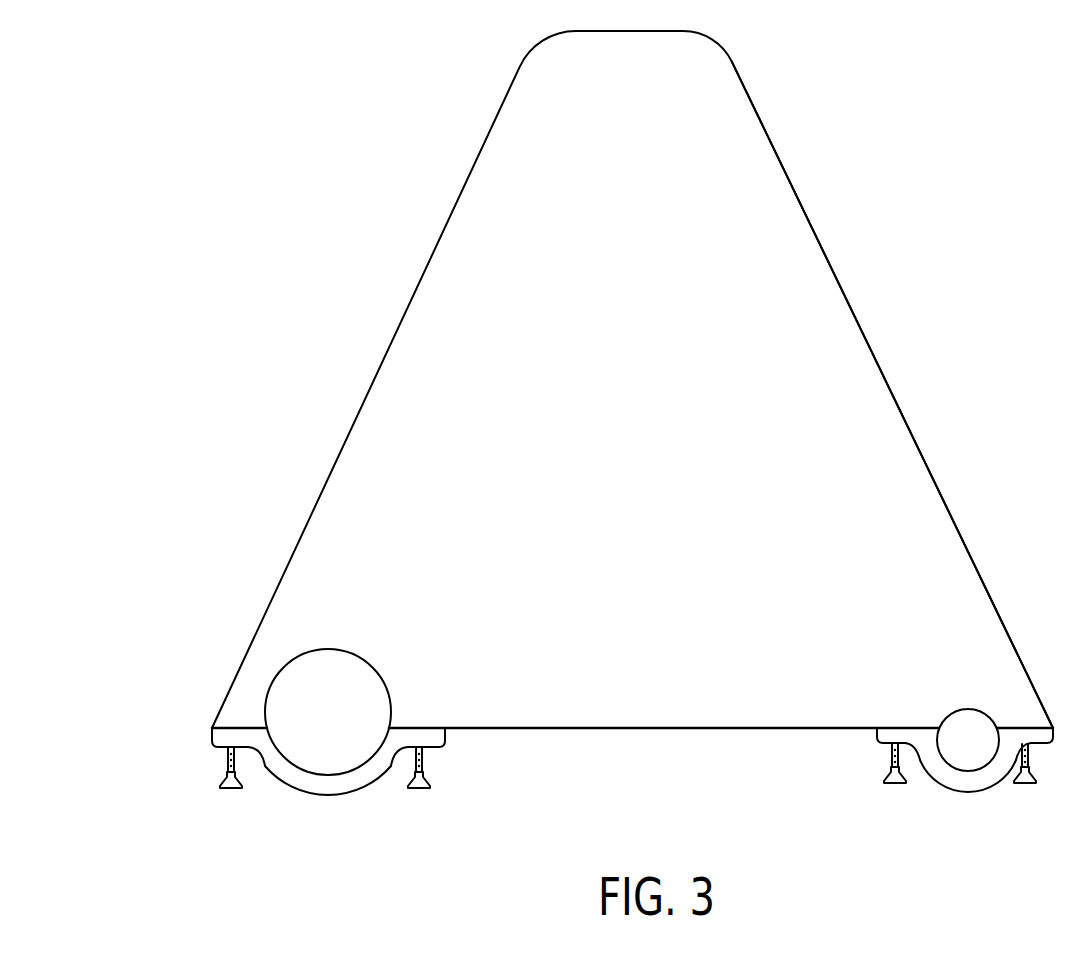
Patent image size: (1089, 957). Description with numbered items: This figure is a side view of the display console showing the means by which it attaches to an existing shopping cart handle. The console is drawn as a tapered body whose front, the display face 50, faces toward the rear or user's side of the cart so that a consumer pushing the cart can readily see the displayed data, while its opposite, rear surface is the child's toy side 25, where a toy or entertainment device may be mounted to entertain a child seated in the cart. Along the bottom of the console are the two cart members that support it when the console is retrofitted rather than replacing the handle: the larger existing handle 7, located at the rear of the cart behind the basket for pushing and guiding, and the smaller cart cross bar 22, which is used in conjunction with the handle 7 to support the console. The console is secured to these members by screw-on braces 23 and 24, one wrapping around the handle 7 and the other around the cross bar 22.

The display face 50 is at (366, 380).
The child's toy side 25 is at (868, 303).
The handle 7 is at (275, 656).
The screw-on brace 23 is at (385, 792).
The cart cross bar 22 is at (938, 706).
The screw-on brace 24 is at (926, 790).